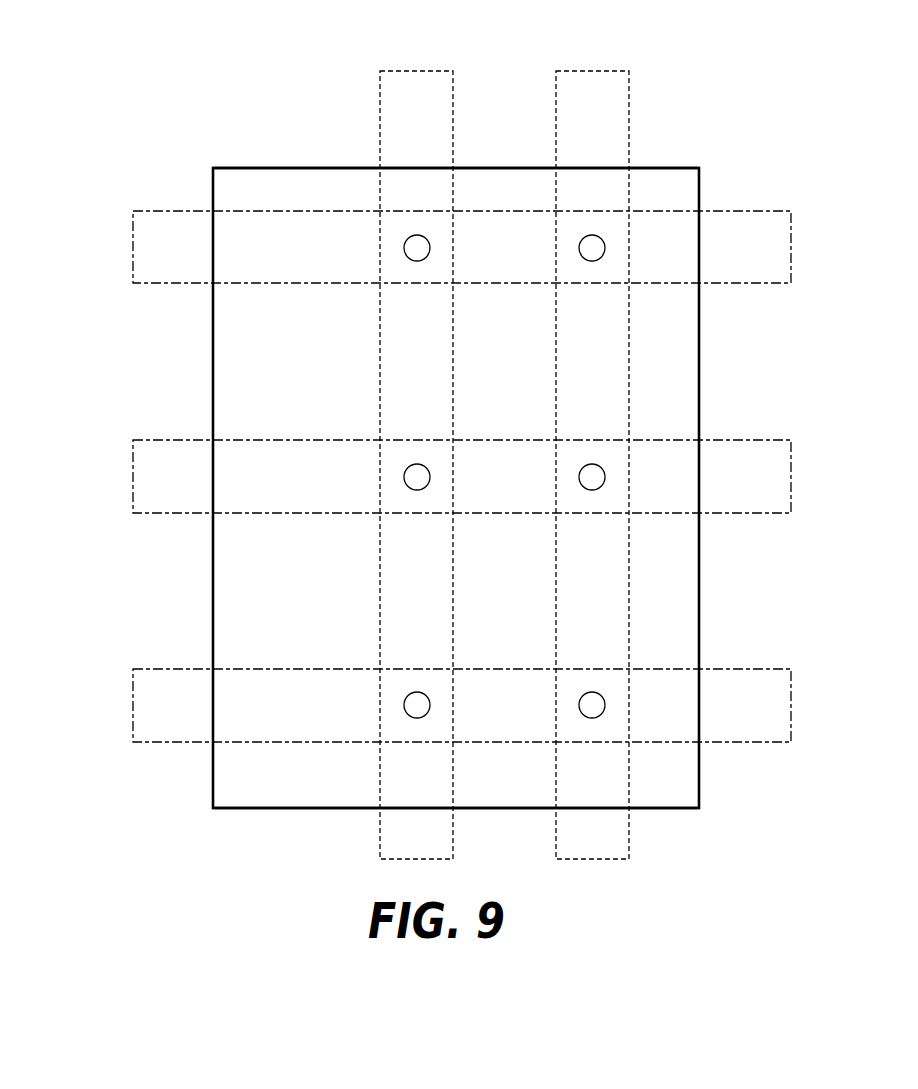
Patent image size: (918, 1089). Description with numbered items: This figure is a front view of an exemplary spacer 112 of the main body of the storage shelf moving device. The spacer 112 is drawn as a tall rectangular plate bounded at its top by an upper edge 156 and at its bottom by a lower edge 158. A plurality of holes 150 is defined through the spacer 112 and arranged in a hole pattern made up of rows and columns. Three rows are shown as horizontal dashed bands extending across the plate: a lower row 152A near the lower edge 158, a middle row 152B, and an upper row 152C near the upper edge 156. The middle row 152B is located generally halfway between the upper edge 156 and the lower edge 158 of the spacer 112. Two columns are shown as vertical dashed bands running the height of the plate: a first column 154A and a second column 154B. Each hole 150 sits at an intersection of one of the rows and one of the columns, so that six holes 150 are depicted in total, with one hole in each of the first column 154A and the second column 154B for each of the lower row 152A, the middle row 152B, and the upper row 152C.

The spacer 112 is at (275, 167).
The holes 150 is at (404, 477).
The lower row 152A is at (133, 706).
The middle row 152B is at (133, 476).
The upper row 152C is at (133, 245).
The first column 154A is at (406, 71).
The second column 154B is at (580, 71).
The upper edge 156 is at (685, 168).
The lower edge 158 is at (683, 808).